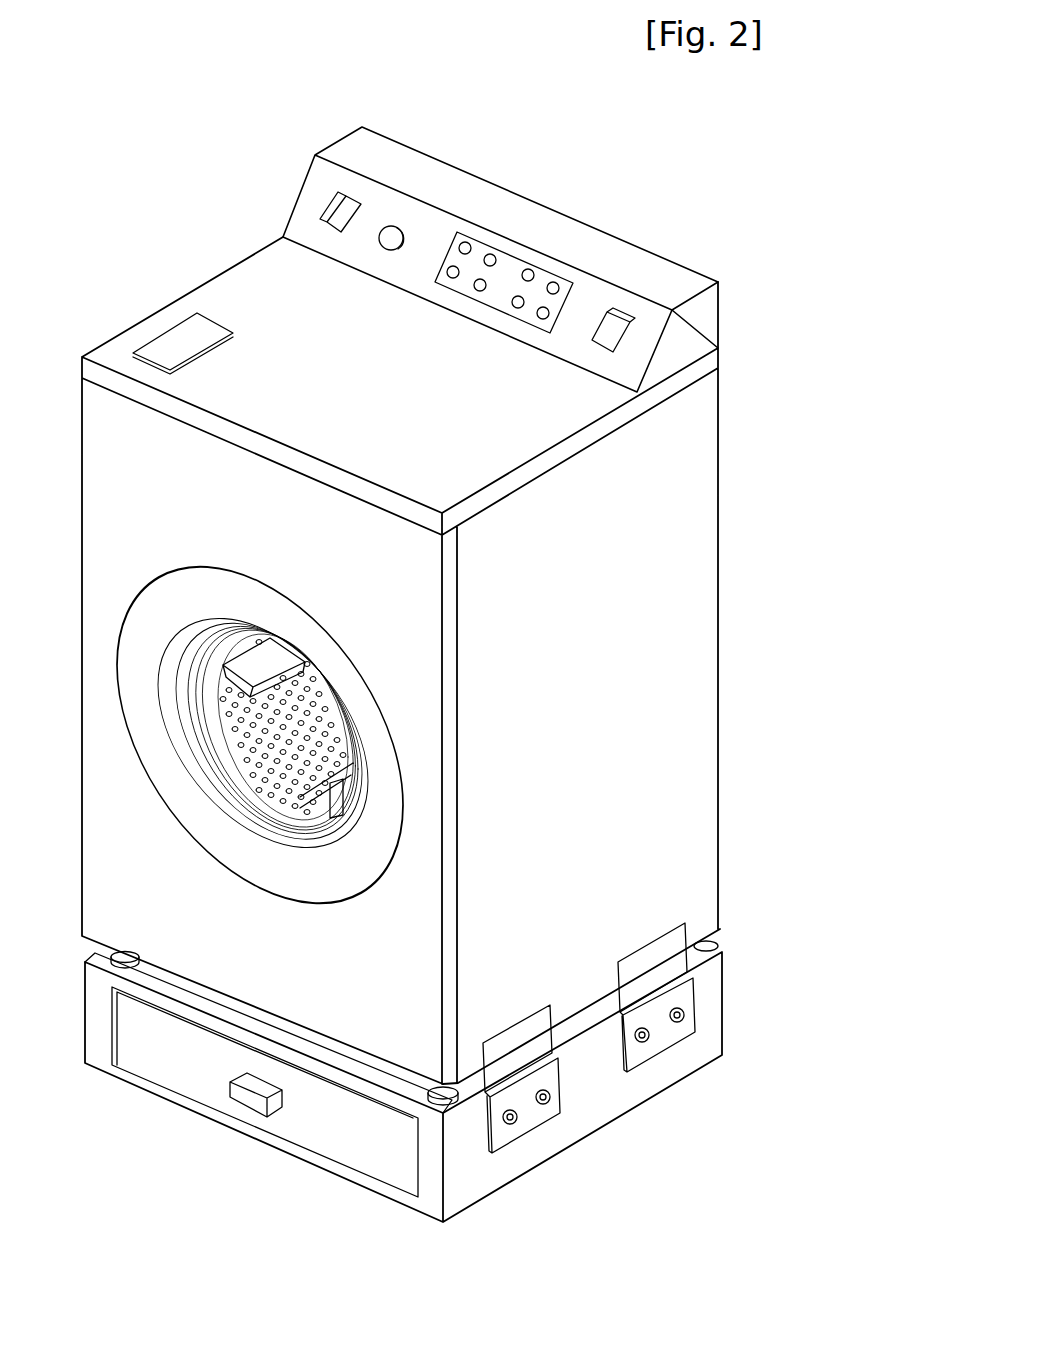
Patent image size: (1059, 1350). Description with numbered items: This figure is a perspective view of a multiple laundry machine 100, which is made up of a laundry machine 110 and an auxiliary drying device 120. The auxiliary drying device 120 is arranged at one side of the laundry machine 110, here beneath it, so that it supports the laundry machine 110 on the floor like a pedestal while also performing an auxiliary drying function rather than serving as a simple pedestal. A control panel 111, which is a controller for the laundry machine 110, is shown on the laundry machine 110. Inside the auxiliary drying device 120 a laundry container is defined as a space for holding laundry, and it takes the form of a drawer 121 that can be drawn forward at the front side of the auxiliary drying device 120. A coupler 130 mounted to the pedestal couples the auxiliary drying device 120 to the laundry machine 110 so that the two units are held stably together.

The multiple laundry machine 100 is at (758, 384).
The laundry machine 110 is at (698, 681).
The control panel 111 is at (648, 312).
The auxiliary drying device 120 is at (720, 1003).
The drawer 121 is at (182, 1073).
The coupler 130 is at (672, 962).